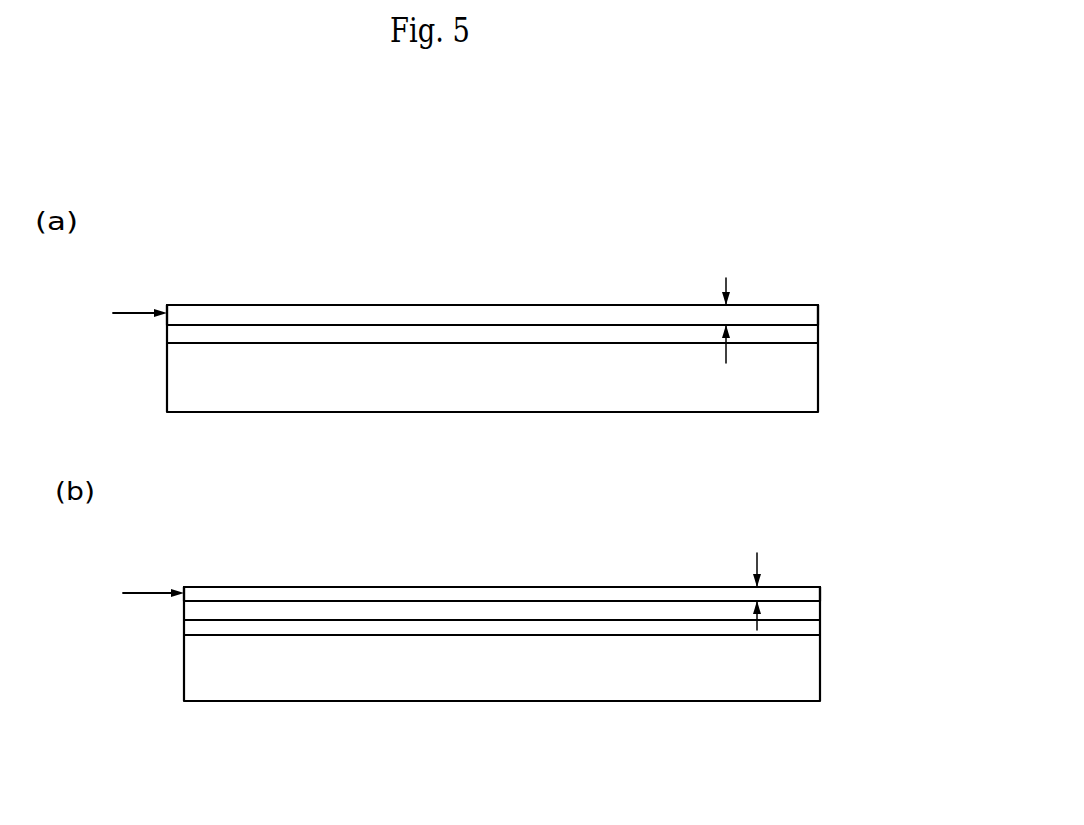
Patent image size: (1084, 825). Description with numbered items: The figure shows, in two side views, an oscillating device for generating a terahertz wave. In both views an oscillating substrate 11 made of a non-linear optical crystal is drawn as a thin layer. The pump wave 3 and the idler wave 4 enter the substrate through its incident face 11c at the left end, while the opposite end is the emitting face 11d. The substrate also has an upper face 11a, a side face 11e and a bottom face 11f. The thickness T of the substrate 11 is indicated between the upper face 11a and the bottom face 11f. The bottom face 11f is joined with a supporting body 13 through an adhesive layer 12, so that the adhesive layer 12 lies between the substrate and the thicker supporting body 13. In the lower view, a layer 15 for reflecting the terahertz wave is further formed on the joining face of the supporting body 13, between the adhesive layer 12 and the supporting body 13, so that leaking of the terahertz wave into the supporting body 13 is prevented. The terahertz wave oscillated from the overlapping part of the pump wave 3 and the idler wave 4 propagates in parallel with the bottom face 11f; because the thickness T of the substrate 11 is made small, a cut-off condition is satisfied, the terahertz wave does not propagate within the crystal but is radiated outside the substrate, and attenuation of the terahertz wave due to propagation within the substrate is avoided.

The pump wave 3 is at (134, 423).
The idler wave 4 is at (130, 310).
The oscillating substrate 11 is at (459, 311).
The upper face 11a is at (372, 305).
The incident face 11c is at (168, 306).
The emitting face 11d is at (819, 310).
The side face 11e is at (512, 318).
The bottom face 11f is at (632, 327).
The adhesive layer 12 is at (172, 334).
The supporting body 13 is at (182, 392).
The layer for reflecting terahertz wave 15 is at (212, 627).
The thickness of the substrate T is at (730, 318).